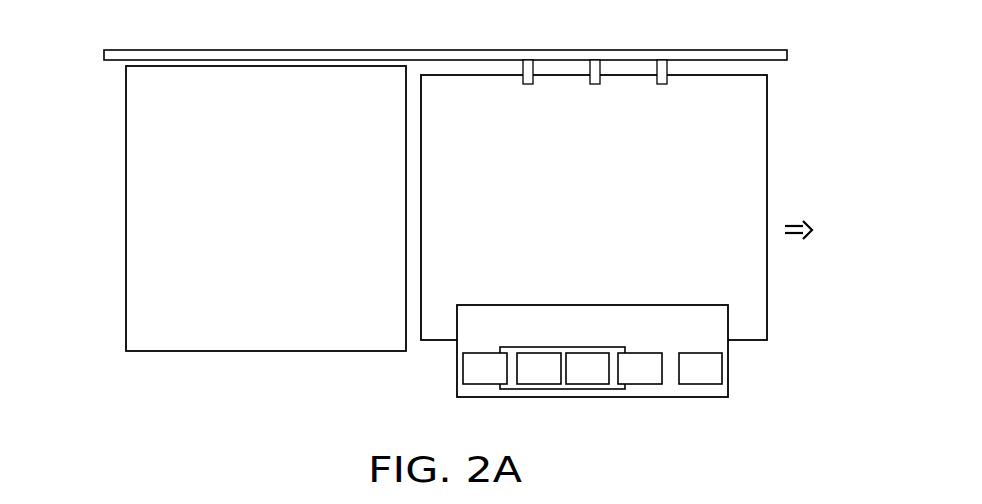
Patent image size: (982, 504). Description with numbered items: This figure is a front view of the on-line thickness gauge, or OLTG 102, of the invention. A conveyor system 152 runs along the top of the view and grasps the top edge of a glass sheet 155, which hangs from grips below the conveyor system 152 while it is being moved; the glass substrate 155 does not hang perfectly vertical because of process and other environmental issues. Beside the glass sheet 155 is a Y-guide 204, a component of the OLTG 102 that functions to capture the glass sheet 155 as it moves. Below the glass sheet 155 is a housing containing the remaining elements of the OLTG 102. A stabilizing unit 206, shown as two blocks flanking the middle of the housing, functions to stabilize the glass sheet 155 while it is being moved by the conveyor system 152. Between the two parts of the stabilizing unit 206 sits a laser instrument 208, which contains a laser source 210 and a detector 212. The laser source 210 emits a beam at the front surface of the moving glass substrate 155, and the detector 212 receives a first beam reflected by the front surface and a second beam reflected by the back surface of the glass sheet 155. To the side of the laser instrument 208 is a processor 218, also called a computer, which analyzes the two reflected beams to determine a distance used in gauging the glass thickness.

The OLTG 102 is at (326, 356).
The conveyor system 152 is at (710, 50).
The glass sheet 155 is at (768, 120).
The Y-guide 204 is at (126, 120).
The stabilizing unit 206 is at (562, 368).
The laser instrument 208 is at (563, 347).
The laser source 210 is at (587, 368).
The detector 212 is at (539, 368).
The processor 218 is at (700, 368).